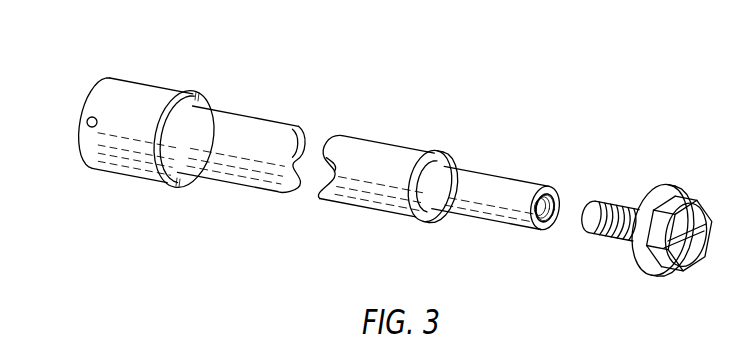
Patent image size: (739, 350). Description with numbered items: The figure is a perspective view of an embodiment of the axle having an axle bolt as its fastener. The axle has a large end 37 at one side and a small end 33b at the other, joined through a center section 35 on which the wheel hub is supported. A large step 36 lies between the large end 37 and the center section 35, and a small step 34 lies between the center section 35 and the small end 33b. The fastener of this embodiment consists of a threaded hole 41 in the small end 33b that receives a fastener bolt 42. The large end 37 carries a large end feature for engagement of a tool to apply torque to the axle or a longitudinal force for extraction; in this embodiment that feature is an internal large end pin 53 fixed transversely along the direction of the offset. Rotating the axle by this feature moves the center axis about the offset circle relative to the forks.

The large end 37 is at (128, 76).
The large end pin 53 is at (65, 112).
The large step 36 is at (195, 96).
The center section 35 is at (287, 132).
The small step 34 is at (441, 154).
The small end 33b is at (502, 186).
The threaded hole 41 is at (557, 235).
The fastener bolt 42 is at (661, 188).